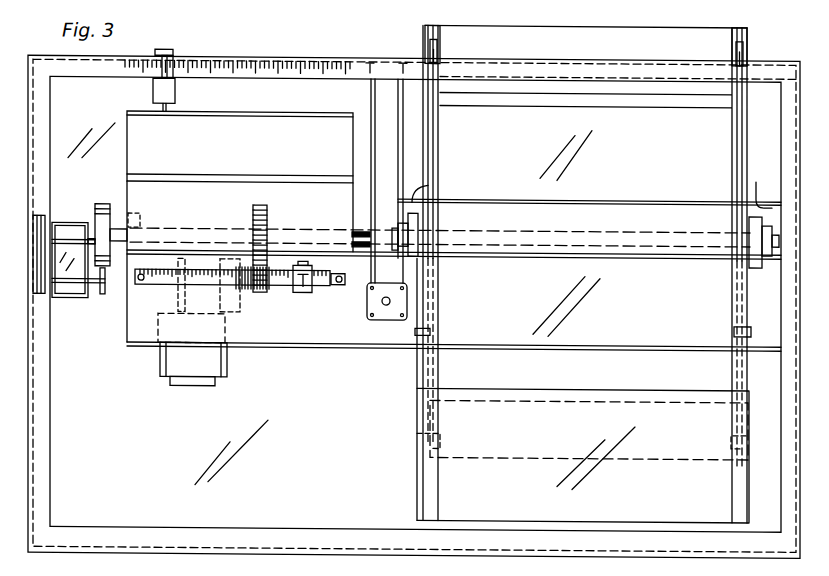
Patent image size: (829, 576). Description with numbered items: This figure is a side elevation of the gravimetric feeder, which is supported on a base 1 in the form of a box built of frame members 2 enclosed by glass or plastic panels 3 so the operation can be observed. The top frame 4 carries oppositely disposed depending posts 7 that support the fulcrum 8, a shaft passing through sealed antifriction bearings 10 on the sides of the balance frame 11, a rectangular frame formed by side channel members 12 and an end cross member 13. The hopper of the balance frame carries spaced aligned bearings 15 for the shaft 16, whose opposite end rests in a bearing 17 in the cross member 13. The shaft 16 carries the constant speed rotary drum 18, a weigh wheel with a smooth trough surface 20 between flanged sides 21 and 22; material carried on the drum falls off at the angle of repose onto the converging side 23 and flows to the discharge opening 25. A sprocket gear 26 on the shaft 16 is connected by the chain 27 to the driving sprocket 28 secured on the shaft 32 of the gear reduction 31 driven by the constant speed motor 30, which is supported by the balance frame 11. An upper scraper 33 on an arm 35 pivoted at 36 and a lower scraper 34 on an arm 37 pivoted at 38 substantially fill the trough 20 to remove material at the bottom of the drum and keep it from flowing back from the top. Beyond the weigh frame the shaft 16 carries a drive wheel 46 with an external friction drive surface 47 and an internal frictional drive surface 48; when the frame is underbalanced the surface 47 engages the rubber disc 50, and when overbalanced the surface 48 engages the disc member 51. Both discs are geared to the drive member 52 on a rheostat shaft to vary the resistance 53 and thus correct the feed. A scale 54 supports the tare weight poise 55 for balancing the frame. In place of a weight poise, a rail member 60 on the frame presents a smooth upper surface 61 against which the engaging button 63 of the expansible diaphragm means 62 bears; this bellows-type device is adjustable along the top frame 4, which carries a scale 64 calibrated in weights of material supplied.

The base 1 is at (713, 540).
The frame members 2 is at (40, 408).
The panels 3 is at (157, 460).
The top frame 4 is at (766, 64).
The depending posts 7 is at (388, 144).
The fulcrum 8 is at (386, 303).
The bearings 10 is at (365, 298).
The balance frame 11 is at (665, 292).
The side channel members 12 is at (532, 294).
The end cross member 13 is at (160, 250).
The bearings 15 is at (425, 222).
The shaft 16 is at (358, 229).
The bearing 17 is at (135, 248).
The constant speed rotary drum 18 is at (556, 180).
The trough surface 20 is at (658, 166).
The flanged side 21 is at (440, 126).
The flanged side 22 is at (735, 127).
The converging side 23 is at (517, 488).
The discharge opening 25 is at (592, 517).
The sprocket gear 26 is at (256, 226).
The chain 27 is at (268, 245).
The driving sprocket 28 is at (301, 261).
The motor 30 is at (167, 376).
The gear reduction 31 is at (178, 292).
The shaft 32 is at (275, 295).
The upper scraper 33 is at (668, 40).
The lower scraper 34 is at (492, 450).
The arm 35 is at (424, 45).
The pivot 36 is at (430, 183).
The arm 37 is at (415, 428).
The pivot 38 is at (433, 328).
The drive wheel 46 is at (108, 204).
The external friction drive surface 47 is at (100, 205).
The internal frictional drive surface 48 is at (95, 212).
The rubber disc 50 is at (103, 290).
The disc member 51 is at (130, 211).
The drive member 52 is at (55, 293).
The resistance 53 is at (52, 318).
The scale 54 is at (222, 285).
The tare weight poise 55 is at (300, 290).
The rail member 60 is at (205, 132).
The upper surface 61 is at (265, 110).
The expansible diaphragm means 62 is at (170, 88).
The engaging button 63 is at (160, 106).
The scale 64 is at (261, 57).